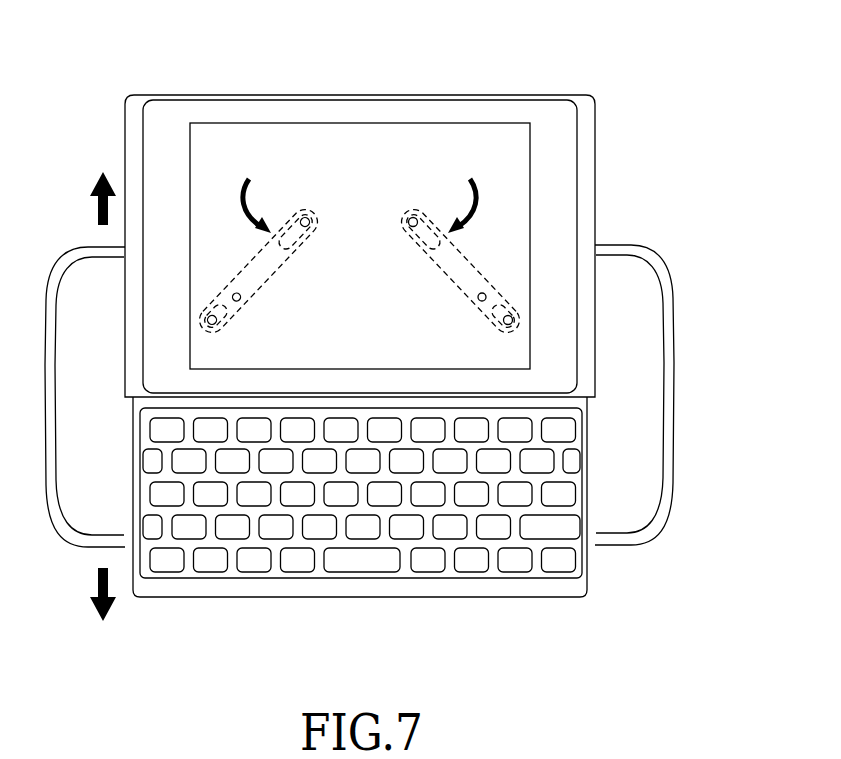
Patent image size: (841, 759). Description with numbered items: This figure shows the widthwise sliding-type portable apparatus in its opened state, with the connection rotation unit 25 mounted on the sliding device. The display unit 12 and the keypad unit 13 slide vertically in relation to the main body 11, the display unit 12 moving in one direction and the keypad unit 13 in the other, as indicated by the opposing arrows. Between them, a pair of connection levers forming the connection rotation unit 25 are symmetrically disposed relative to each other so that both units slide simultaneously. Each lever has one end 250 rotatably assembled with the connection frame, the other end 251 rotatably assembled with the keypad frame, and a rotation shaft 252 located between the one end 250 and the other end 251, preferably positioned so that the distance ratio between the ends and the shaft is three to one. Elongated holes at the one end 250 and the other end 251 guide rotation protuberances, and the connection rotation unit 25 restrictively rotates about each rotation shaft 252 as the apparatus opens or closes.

The main body 11 is at (647, 458).
The display unit 12 is at (497, 95).
The keypad unit 13 is at (345, 597).
The connection rotation unit 25 is at (477, 273).
The one end 250 is at (409, 218).
The other end 251 is at (517, 327).
The rotation shaft 252 is at (487, 294).